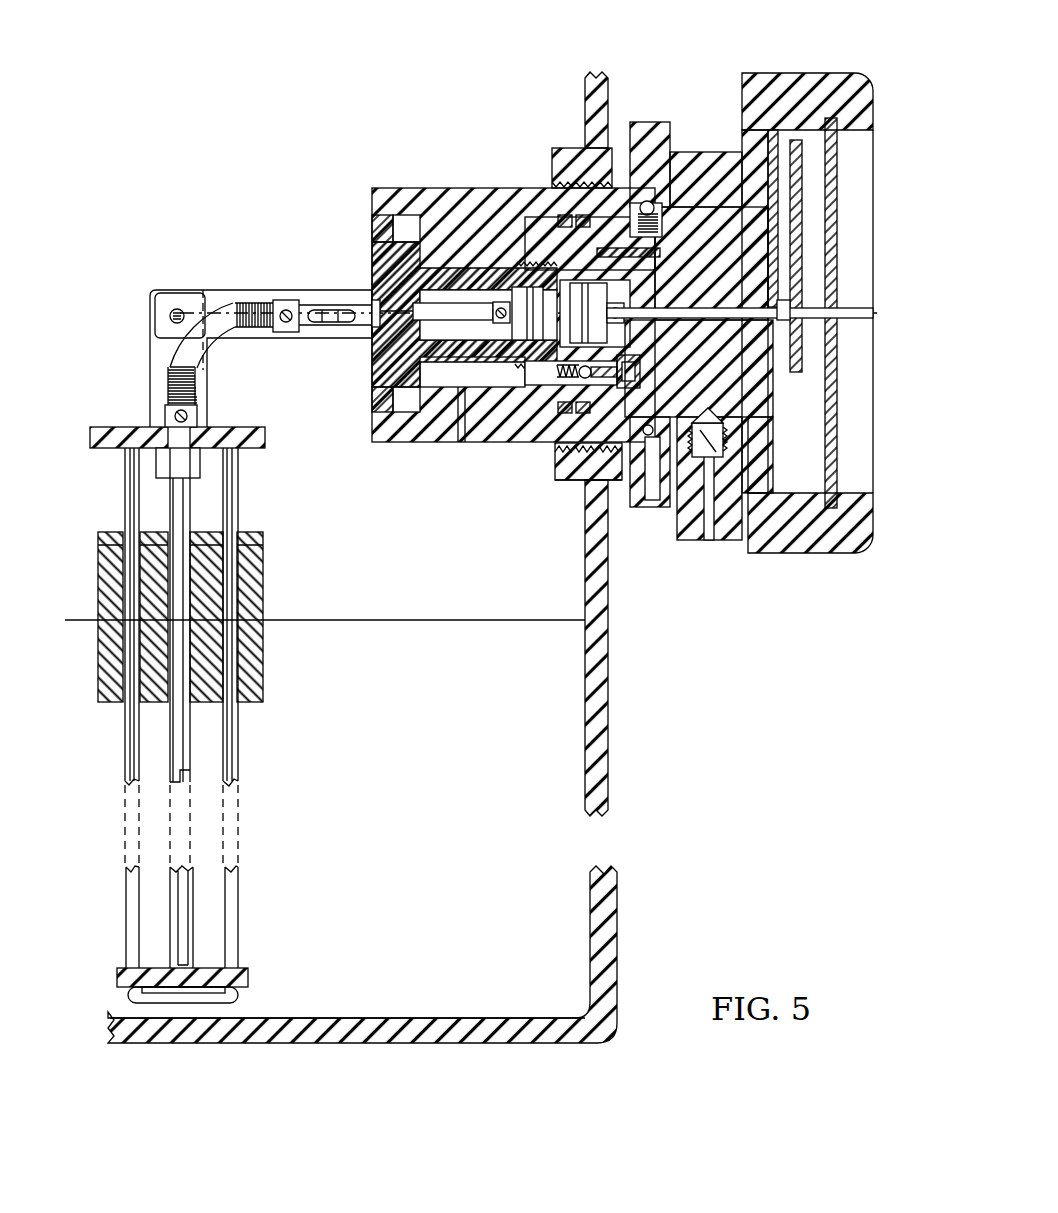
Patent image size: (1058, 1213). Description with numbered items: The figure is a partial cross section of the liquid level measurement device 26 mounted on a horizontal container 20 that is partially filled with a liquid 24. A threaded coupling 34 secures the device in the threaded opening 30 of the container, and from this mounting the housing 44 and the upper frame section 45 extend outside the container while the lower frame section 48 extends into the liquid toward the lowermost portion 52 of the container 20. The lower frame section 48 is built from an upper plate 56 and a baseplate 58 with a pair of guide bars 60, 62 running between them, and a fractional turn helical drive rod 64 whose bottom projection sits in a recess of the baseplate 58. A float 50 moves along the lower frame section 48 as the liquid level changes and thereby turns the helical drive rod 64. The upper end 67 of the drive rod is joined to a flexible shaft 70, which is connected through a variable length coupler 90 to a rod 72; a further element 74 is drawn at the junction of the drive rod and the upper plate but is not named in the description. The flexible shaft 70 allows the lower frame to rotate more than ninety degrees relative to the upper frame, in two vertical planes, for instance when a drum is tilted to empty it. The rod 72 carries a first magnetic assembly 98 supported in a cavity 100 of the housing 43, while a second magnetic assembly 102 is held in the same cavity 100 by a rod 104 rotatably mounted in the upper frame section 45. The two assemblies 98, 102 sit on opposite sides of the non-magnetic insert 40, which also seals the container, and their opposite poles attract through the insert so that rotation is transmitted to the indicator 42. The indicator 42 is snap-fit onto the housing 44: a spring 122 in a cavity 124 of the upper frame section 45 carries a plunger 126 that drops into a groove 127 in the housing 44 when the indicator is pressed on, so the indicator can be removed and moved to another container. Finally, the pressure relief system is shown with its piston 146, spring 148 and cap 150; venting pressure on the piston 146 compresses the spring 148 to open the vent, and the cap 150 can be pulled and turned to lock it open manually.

The container 20 is at (618, 925).
The liquid 24 is at (387, 617).
The liquid level measurement device 26 is at (782, 604).
The opening 30 is at (560, 480).
The threaded coupling 34 is at (580, 150).
The insert 40 is at (483, 293).
The indicator 42 is at (828, 575).
The housing 43 is at (393, 193).
The housing 44 is at (428, 262).
The upper frame section 45 is at (815, 72).
The lower frame section 48 is at (206, 708).
The float 50 is at (265, 580).
The lowermost portion 52 is at (363, 1020).
The upper plate 56 is at (267, 440).
The baseplate 58 is at (250, 983).
The guide bar 60 is at (238, 755).
The guide bar 62 is at (126, 742).
The fractional turn helical drive rod 64 is at (180, 760).
The upper end 67 is at (170, 416).
The flexible shaft 70 is at (207, 292).
The rod 72 is at (445, 318).
The coupling block 74 is at (180, 462).
The variable length coupler 90 is at (320, 302).
The first magnetic assembly 98 is at (523, 333).
The cavity 100 is at (410, 188).
The second magnetic assembly 102 is at (595, 298).
The rod 104 is at (840, 248).
The spring 122 is at (662, 230).
The cavity 124 is at (662, 233).
The plunger 126 is at (647, 203).
The groove 127 is at (655, 434).
The piston 146 is at (708, 540).
The spring 148 is at (743, 540).
The cap 150 is at (693, 540).